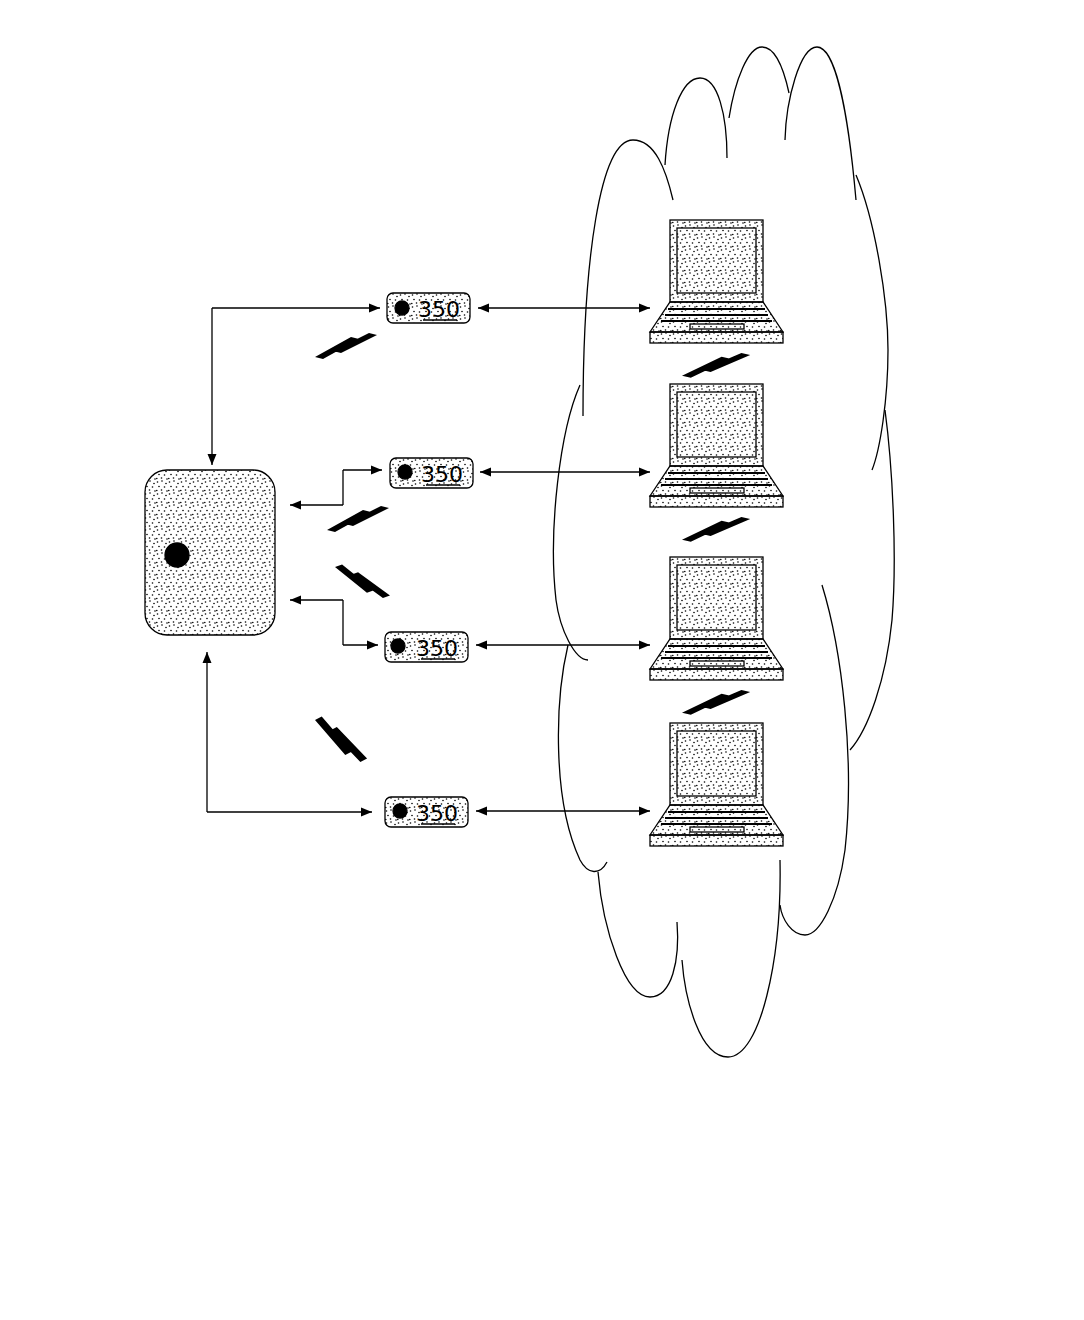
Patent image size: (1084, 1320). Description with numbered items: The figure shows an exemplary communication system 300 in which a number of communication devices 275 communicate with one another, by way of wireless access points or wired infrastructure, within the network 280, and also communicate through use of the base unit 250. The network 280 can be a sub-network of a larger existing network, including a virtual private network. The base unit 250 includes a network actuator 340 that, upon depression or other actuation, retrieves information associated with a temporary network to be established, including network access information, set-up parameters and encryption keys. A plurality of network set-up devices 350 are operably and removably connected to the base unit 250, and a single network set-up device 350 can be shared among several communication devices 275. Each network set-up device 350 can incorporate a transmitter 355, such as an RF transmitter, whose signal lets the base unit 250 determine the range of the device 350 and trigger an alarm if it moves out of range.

The communication system 300 is at (506, 1148).
The network 280 is at (603, 177).
The communication devices 275 is at (698, 279).
The base unit 250 is at (210, 569).
The network actuator 340 is at (166, 551).
The network set-up devices 350 is at (429, 560).
The transmitter 355 is at (410, 298).